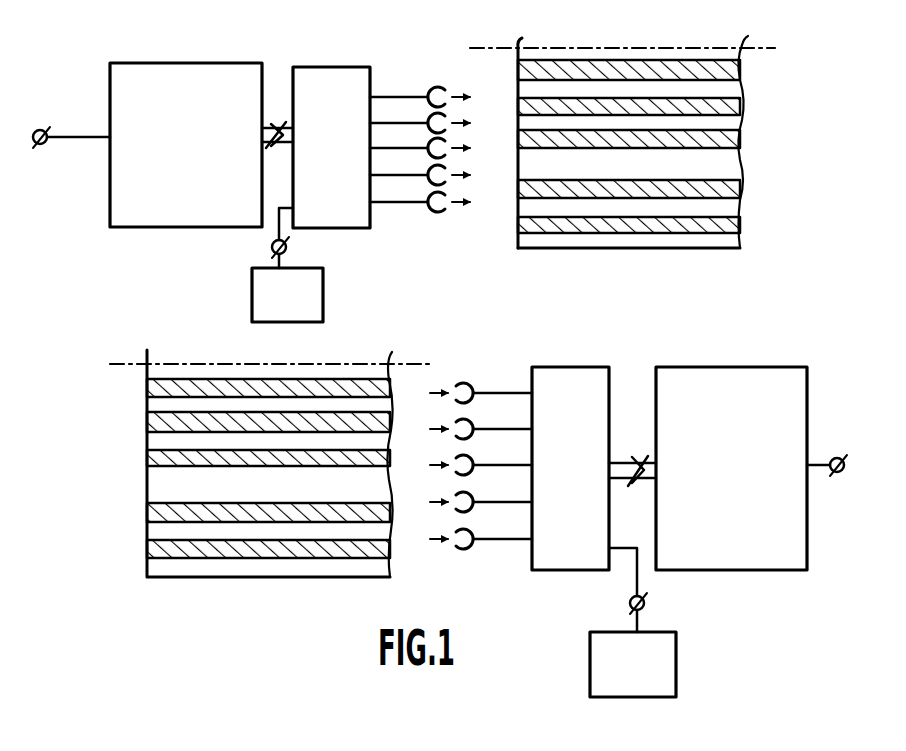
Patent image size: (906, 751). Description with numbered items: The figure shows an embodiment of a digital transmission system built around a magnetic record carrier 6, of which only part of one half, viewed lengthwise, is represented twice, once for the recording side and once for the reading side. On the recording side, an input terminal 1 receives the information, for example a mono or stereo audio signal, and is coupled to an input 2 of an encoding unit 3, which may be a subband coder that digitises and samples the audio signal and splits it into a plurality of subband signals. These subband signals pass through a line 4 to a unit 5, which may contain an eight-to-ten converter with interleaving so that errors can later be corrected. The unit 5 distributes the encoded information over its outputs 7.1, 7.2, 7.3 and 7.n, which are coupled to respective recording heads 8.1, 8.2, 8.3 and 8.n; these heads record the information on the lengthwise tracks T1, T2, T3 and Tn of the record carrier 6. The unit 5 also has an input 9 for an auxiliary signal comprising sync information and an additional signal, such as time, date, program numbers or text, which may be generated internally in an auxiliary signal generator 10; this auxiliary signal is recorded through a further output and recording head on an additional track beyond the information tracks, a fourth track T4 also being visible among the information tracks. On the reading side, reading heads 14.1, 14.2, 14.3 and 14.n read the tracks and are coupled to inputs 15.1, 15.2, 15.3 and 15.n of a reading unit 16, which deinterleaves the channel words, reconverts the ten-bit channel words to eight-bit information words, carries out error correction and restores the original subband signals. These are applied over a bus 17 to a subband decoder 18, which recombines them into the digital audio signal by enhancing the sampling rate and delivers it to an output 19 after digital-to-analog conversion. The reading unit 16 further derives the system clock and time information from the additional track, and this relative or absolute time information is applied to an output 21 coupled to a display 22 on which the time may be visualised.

The input terminal 1 is at (46, 146).
The input 2 is at (108, 135).
The encoding unit 3 is at (173, 63).
The line 4 is at (280, 126).
The unit 5 is at (340, 67).
The magnetic record carrier 6 is at (454, 327).
The output 7.1 is at (372, 95).
The output 7.2 is at (399, 112).
The output 7.3 is at (399, 137).
The output 7.n is at (371, 175).
The recording head 8.1 is at (439, 87).
The recording head 8.2 is at (429, 119).
The recording head 8.3 is at (429, 144).
The recording head 8.n is at (430, 170).
The input 9 is at (271, 247).
The auxiliary signal generator 10 is at (252, 291).
The reading head 14.1 is at (463, 383).
The reading head 14.2 is at (474, 416).
The reading head 14.3 is at (474, 452).
The reading head 14.n is at (474, 488).
The input 15.1 is at (529, 391).
The input 15.2 is at (529, 428).
The input 15.3 is at (529, 465).
The input 15.n is at (529, 502).
The reading unit 16 is at (569, 367).
The bus/line 17 is at (640, 460).
The subband decoder 18 is at (733, 367).
The output 19 is at (842, 474).
The output 21 is at (610, 547).
The display 22 is at (677, 652).
The track T1 is at (733, 74).
The track T2 is at (733, 110).
The track T3 is at (733, 141).
The track T4 is at (150, 514).
The track Tn is at (733, 190).